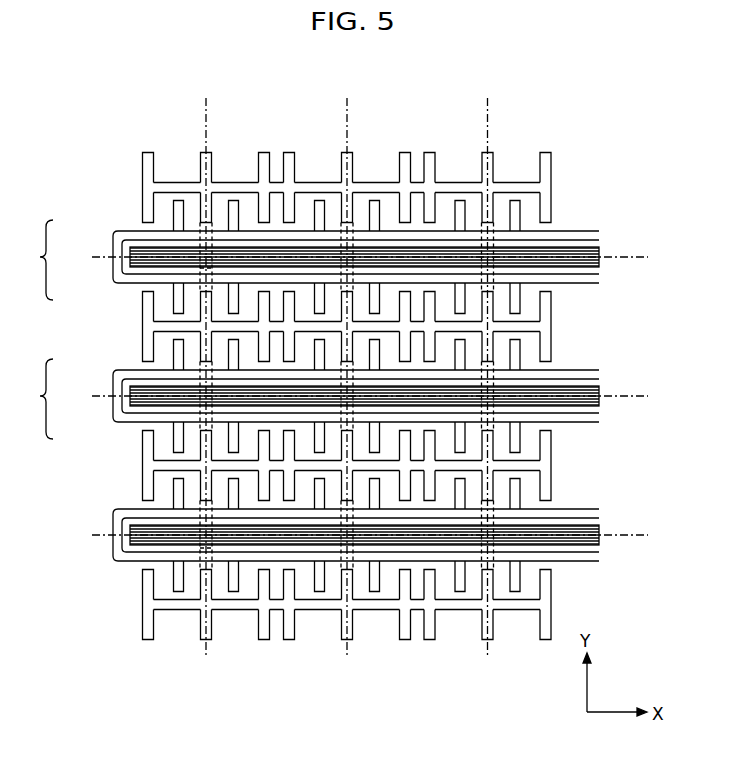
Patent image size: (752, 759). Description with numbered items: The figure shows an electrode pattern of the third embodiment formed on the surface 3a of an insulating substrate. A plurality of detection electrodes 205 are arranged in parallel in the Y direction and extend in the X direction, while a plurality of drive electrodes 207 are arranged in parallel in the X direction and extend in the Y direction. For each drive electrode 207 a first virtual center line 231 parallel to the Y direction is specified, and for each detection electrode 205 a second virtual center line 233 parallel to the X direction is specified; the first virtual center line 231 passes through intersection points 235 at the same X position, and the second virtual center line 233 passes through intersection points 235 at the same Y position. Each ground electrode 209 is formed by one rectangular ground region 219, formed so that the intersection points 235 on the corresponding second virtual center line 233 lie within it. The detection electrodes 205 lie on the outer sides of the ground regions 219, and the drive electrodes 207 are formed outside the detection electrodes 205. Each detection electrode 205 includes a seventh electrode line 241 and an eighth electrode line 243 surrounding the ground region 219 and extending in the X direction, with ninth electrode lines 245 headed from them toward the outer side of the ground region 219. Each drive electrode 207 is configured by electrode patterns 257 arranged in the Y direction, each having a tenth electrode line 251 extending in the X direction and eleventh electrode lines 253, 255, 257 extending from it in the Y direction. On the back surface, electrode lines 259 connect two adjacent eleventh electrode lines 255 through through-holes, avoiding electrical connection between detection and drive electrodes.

The surface of the insulating substrate 3a is at (570, 165).
The detection electrode 205 is at (307, 382).
The drive electrode 207 is at (182, 130).
The ground electrode 209 is at (557, 281).
The ground region 219 is at (585, 267).
The first virtual center line 231 is at (208, 106).
The second virtual center line 233 is at (623, 256).
The intersection point 235 is at (203, 250).
The seventh electrode line 241 is at (137, 234).
The eighth electrode line 243 is at (137, 283).
The ninth electrode line 245 is at (374, 200).
The tenth electrode line 251 is at (231, 183).
The eleventh electrode line 253 is at (141, 167).
The eleventh electrode line 255 is at (208, 152).
The electrode pattern 257 is at (171, 176).
The electrode line 259 is at (200, 268).